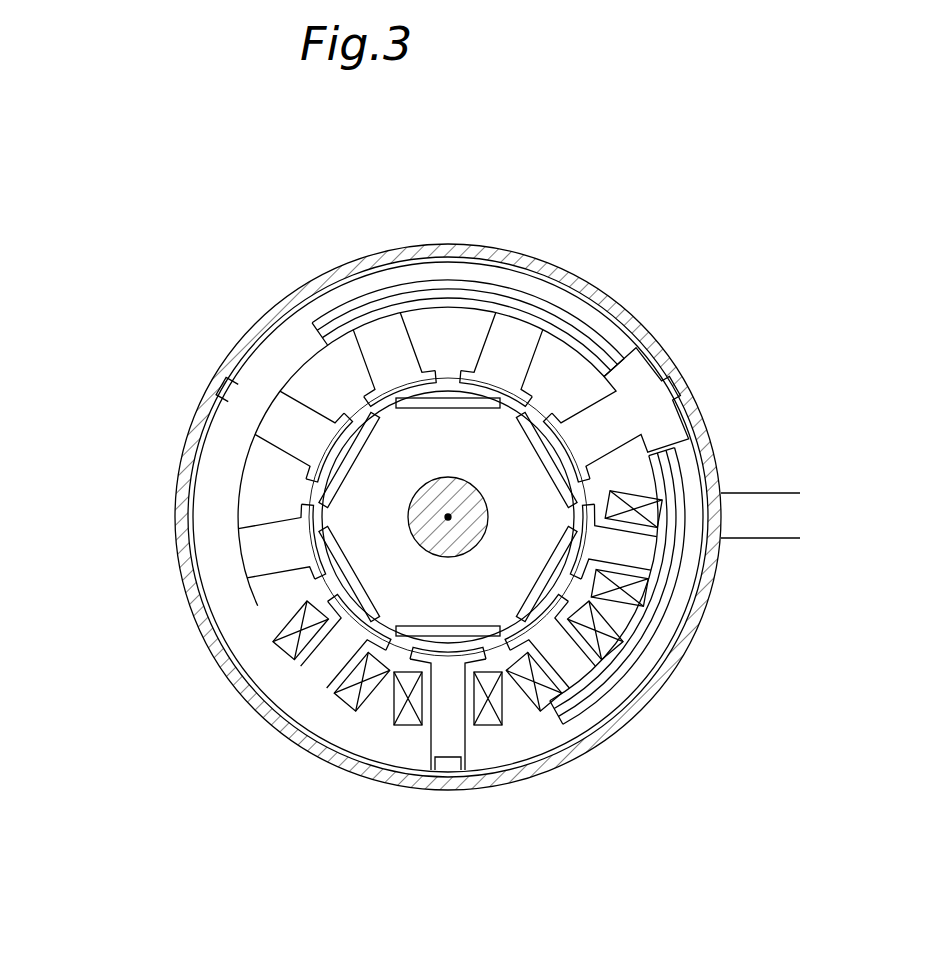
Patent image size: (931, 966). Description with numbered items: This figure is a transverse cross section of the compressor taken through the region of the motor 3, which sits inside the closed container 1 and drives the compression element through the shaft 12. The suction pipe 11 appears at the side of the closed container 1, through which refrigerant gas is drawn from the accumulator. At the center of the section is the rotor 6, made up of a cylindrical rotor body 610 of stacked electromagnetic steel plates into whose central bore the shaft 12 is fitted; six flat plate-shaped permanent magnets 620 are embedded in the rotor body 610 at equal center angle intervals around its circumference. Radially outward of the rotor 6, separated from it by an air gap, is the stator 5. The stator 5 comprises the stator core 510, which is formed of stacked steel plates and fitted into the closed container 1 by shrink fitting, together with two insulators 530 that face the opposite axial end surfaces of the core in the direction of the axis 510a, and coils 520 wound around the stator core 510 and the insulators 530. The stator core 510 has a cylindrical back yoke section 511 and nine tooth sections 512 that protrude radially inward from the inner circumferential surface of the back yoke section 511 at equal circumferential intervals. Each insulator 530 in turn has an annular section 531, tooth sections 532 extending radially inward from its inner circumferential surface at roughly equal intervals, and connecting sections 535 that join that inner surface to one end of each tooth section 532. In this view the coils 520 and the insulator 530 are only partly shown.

The closed container 1 is at (573, 336).
The motor 3 is at (384, 556).
The stator 5 is at (253, 349).
The rotor 6 is at (425, 525).
The suction pipe 11 is at (771, 514).
The shaft 12 is at (433, 623).
The stator core 510 is at (281, 546).
The axis 510a is at (449, 516).
The back yoke section 511 is at (275, 547).
The tooth section 512 is at (314, 540).
The coil 520 is at (488, 698).
The insulator 530 is at (525, 509).
The annular section 531 is at (566, 346).
The tooth section 532 is at (299, 328).
The connecting section 535 is at (431, 306).
The rotor body 610 is at (441, 557).
The magnet 620 is at (478, 399).